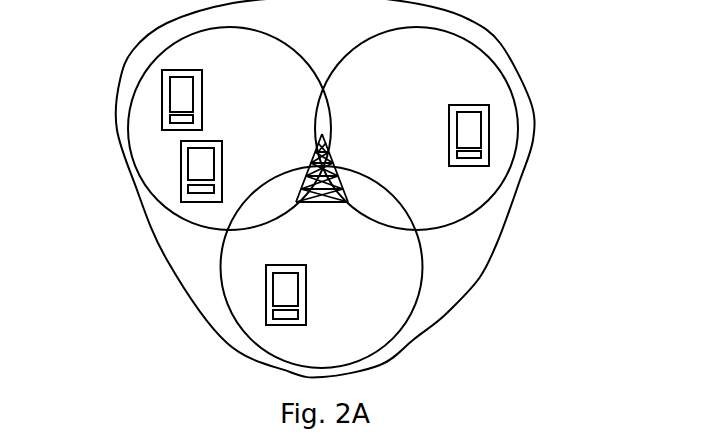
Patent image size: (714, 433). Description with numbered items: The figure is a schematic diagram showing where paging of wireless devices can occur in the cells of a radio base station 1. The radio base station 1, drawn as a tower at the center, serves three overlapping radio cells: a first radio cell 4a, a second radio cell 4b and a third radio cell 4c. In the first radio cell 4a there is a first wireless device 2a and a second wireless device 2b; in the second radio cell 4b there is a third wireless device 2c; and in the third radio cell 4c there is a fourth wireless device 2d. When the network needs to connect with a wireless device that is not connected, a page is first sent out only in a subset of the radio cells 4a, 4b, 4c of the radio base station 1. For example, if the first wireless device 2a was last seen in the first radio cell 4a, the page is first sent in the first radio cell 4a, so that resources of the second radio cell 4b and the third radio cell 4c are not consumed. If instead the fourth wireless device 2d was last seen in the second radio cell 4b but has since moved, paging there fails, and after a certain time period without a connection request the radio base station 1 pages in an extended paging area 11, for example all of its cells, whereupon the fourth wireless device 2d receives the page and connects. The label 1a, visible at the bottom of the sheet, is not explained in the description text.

The radio base station 1 is at (328, 155).
The base station 1a is at (182, 427).
The first wireless device 2a is at (162, 112).
The second wireless device 2b is at (181, 170).
The third wireless device 2c is at (489, 130).
The fourth wireless device 2d is at (266, 310).
The first radio cell 4a is at (247, 63).
The second radio cell 4b is at (429, 63).
The third radio cell 4c is at (353, 345).
The extended paging area 11 is at (497, 243).